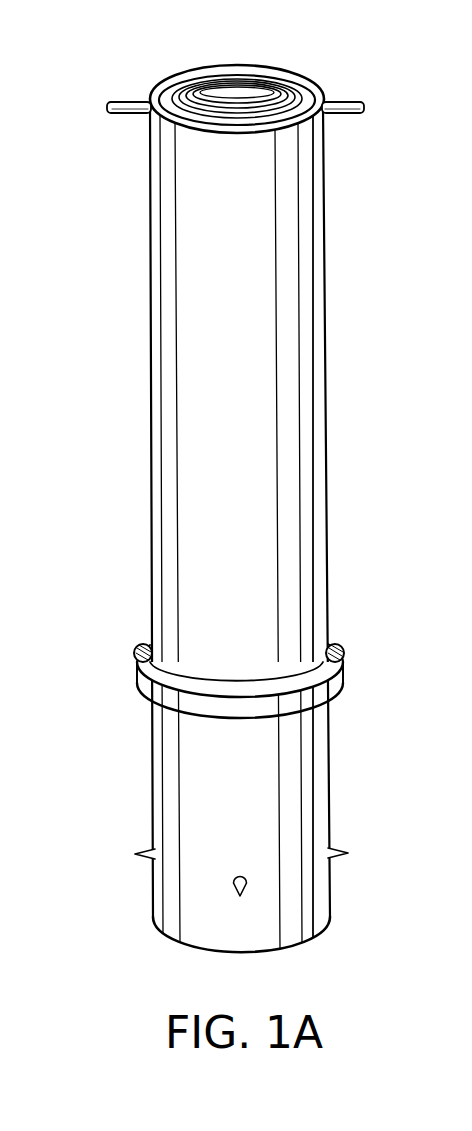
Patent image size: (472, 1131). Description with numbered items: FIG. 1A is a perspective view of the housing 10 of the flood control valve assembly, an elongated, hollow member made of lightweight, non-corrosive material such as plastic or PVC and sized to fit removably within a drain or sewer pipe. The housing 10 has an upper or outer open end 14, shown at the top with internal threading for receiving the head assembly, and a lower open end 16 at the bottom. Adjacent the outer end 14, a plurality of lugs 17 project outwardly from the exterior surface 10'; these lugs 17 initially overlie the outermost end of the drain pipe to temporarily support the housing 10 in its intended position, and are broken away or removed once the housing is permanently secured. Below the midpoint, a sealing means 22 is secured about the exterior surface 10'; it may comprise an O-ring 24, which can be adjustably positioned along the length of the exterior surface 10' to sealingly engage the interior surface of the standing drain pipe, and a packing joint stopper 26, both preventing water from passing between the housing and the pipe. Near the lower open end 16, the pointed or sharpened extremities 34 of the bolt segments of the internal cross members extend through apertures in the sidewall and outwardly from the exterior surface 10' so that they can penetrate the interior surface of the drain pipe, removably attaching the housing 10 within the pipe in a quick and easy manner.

The housing 10 is at (304, 527).
The exterior surface 10' is at (285, 527).
The upper or outer open end 14 is at (262, 67).
The lower open end 16 is at (309, 937).
The lugs 17 is at (118, 103).
The sealing means 22 is at (231, 670).
The O-ring 24 is at (122, 677).
The packing joint stopper 26 is at (344, 672).
The pointed extremity 34 is at (238, 880).